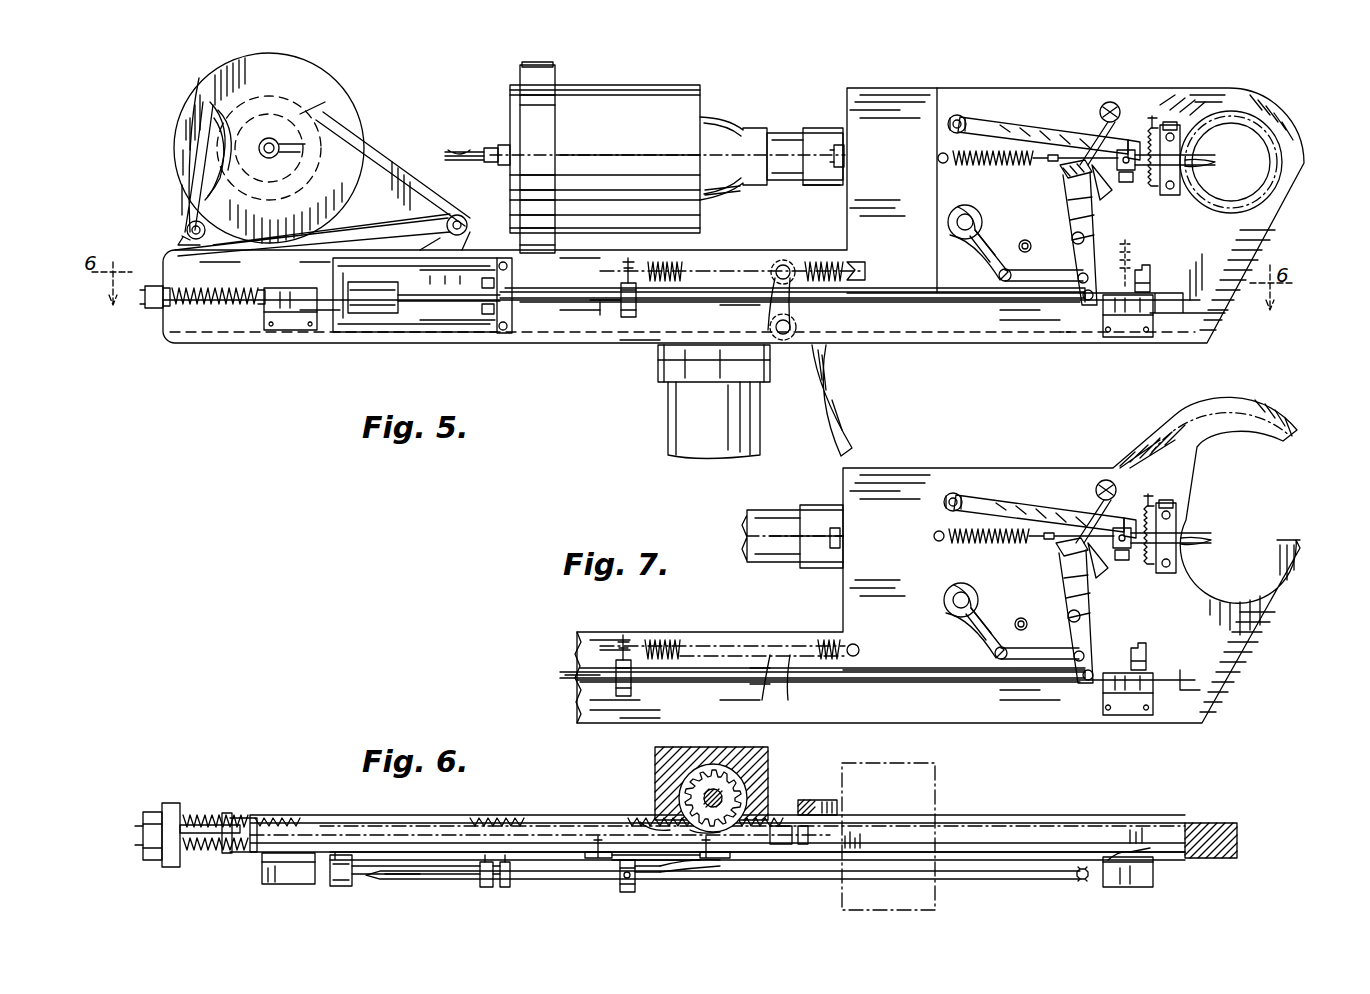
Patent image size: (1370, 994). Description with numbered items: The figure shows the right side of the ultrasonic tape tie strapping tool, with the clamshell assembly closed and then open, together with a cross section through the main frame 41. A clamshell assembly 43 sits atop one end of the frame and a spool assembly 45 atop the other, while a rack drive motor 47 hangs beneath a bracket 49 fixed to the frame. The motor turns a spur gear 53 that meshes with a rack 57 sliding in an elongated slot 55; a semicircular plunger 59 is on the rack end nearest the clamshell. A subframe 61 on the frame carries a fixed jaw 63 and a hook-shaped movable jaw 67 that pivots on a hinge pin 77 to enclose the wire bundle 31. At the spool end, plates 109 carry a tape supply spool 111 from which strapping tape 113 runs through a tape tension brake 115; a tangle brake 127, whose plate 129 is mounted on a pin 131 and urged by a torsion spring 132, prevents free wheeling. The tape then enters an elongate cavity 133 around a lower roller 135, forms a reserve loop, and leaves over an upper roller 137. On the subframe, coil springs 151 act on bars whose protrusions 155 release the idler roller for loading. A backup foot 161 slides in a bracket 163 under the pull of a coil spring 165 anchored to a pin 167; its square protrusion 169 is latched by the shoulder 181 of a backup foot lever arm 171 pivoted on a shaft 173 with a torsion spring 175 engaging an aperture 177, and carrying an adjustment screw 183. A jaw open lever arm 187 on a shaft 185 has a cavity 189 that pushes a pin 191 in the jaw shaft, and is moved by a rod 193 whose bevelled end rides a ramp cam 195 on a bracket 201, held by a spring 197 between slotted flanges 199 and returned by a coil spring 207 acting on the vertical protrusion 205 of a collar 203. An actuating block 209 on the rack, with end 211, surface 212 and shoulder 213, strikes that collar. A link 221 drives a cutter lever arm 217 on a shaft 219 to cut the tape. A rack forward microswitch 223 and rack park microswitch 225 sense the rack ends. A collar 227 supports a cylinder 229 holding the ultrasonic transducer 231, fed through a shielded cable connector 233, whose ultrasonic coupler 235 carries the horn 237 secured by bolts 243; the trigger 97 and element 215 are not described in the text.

In FIG. 5, the wire bundle 31 is at (1280, 190).
In FIG. 5, the main frame 41 is at (925, 340).
In FIG. 7, the main frame 41 is at (880, 720).
In FIG. 6, the main frame 41 is at (1092, 822).
In FIG. 5, the clamshell assembly 43 is at (1328, 146).
In FIG. 7, the clamshell assembly 43 is at (1296, 485).
In FIG. 5, the spool assembly 45 is at (143, 125).
In FIG. 5, the rack drive motor 47 is at (685, 440).
In FIG. 5, the bracket 49 is at (660, 362).
In FIG. 6, the bracket 49 is at (762, 772).
In FIG. 6, the spur gear 53 is at (690, 790).
In FIG. 6, the elongated slot 55 is at (528, 822).
In FIG. 6, the rack 57 is at (640, 820).
In FIG. 5, the semicircular plunger 59 is at (772, 280).
In FIG. 7, the semicircular plunger 59 is at (770, 658).
In FIG. 5, the subframe 61 is at (1092, 88).
In FIG. 7, the subframe 61 is at (1046, 468).
In FIG. 6, the subframe 61 is at (940, 806).
In FIG. 5, the fixed jaw 63 is at (1282, 222).
In FIG. 7, the fixed jaw 63 is at (1265, 608).
In FIG. 6, the fixed jaw 63 is at (1240, 842).
In FIG. 5, the movable jaw 67 is at (1272, 100).
In FIG. 7, the movable jaw 67 is at (1245, 400).
In FIG. 5, the hinge pin 77 is at (1112, 100).
In FIG. 7, the hinge pin 77 is at (1106, 478).
In FIG. 5, the trigger lever 97 is at (830, 400).
In FIG. 6, the trigger lever 97 is at (822, 805).
In FIG. 5, the plates 109 is at (398, 198).
In FIG. 5, the tape supply spool 111 is at (324, 84).
In FIG. 5, the strapping tape 113 is at (385, 156).
In FIG. 6, the strapping tape 113 is at (140, 836).
In FIG. 5, the tape tension brake 115 is at (155, 330).
In FIG. 6, the tape tension brake 115 is at (166, 786).
In FIG. 5, the tangle brake 127 is at (170, 194).
In FIG. 5, the plate 129 is at (195, 158).
In FIG. 5, the pin 131 is at (184, 230).
In FIG. 5, the torsion spring 132 is at (187, 178).
In FIG. 5, the elongate cavity 133 is at (1066, 340).
In FIG. 5, the lower roller 135 is at (783, 345).
In FIG. 6, the lower roller 135 is at (787, 824).
In FIG. 5, the upper roller 137 is at (792, 258).
In FIG. 5, the coil springs 151 is at (1135, 255).
In FIG. 5, the protrusions 155 is at (1152, 282).
In FIG. 7, the protrusions 155 is at (1148, 660).
In FIG. 5, the backup foot 161 is at (1195, 170).
In FIG. 7, the backup foot 161 is at (1200, 545).
In FIG. 5, the bracket 163 is at (1180, 124).
In FIG. 7, the bracket 163 is at (1176, 518).
In FIG. 5, the coil spring 165 is at (995, 168).
In FIG. 7, the coil spring 165 is at (980, 548).
In FIG. 5, the pin 167 is at (938, 162).
In FIG. 7, the pin 167 is at (932, 540).
In FIG. 5, the square protrusion 169 is at (1130, 180).
In FIG. 7, the square protrusion 169 is at (1124, 562).
In FIG. 5, the backup foot lever arm 171 is at (1042, 120).
In FIG. 7, the backup foot lever arm 171 is at (1036, 500).
In FIG. 5, the shaft 173 is at (963, 120).
In FIG. 7, the shaft 173 is at (959, 498).
In FIG. 5, the torsion spring 175 is at (1002, 118).
In FIG. 7, the torsion spring 175 is at (998, 496).
In FIG. 5, the aperture 177 is at (954, 116).
In FIG. 7, the aperture 177 is at (950, 494).
In FIG. 5, the shoulder 181 is at (1122, 150).
In FIG. 7, the shoulder 181 is at (1120, 528).
In FIG. 5, the adjustment screw 183 is at (1154, 126).
In FIG. 7, the adjustment screw 183 is at (1160, 498).
In FIG. 5, the shaft 185 is at (1072, 238).
In FIG. 7, the shaft 185 is at (1080, 618).
In FIG. 5, the jaw open lever arm 187 is at (1068, 220).
In FIG. 7, the jaw open lever arm 187 is at (1064, 596).
In FIG. 6, the jaw open lever arm 187 is at (1075, 885).
In FIG. 5, the cavity 189 is at (1066, 178).
In FIG. 7, the cavity 189 is at (1060, 558).
In FIG. 5, the pin 191 is at (1098, 190).
In FIG. 7, the pin 191 is at (1100, 570).
In FIG. 5, the rod 193 is at (968, 300).
In FIG. 7, the rod 193 is at (978, 698).
In FIG. 6, the rod 193 is at (420, 880).
In FIG. 5, the ramp cam 195 is at (372, 320).
In FIG. 6, the ramp cam 195 is at (345, 887).
In FIG. 5, the spring 197 is at (415, 325).
In FIG. 6, the spring 197 is at (497, 880).
In FIG. 5, the slotted flanges 199 is at (500, 266).
In FIG. 6, the slotted flanges 199 is at (480, 887).
In FIG. 5, the bracket 201 is at (470, 326).
In FIG. 5, the collar 203 is at (630, 320).
In FIG. 7, the collar 203 is at (620, 698).
In FIG. 6, the collar 203 is at (630, 894).
In FIG. 5, the vertical protrusion 205 is at (620, 272).
In FIG. 5, the coil spring 207 is at (685, 262).
In FIG. 7, the coil spring 207 is at (672, 640).
In FIG. 5, the actuating block 209 is at (608, 305).
In FIG. 6, the actuating block 209 is at (695, 862).
In FIG. 5, the end 211 is at (600, 318).
In FIG. 6, the end 211 is at (590, 862).
In FIG. 6, the surface 212 is at (622, 864).
In FIG. 5, the shoulder 213 is at (640, 308).
In FIG. 6, the shoulder 213 is at (640, 875).
In FIG. 5, the bracket 215 is at (1168, 195).
In FIG. 7, the bracket 215 is at (1166, 573).
In FIG. 5, the cutter lever arm 217 is at (990, 262).
In FIG. 7, the cutter lever arm 217 is at (985, 638).
In FIG. 5, the shaft 219 is at (948, 222).
In FIG. 7, the shaft 219 is at (944, 600).
In FIG. 5, the link 221 is at (1025, 274).
In FIG. 7, the link 221 is at (1060, 652).
In FIG. 5, the rack forward microswitch 223 is at (1135, 320).
In FIG. 7, the rack forward microswitch 223 is at (1130, 698).
In FIG. 6, the rack forward microswitch 223 is at (1130, 888).
In FIG. 5, the rack park microswitch 225 is at (295, 330).
In FIG. 6, the rack park microswitch 225 is at (283, 887).
In FIG. 5, the collar 227 is at (545, 70).
In FIG. 5, the cylinder 229 is at (620, 88).
In FIG. 5, the ultrasonic transducer 231 is at (735, 120).
In FIG. 7, the ultrasonic transducer 231 is at (826, 493).
In FIG. 5, the shielded cable connector 233 is at (490, 143).
In FIG. 5, the ultrasonic coupler 235 is at (718, 190).
In FIG. 5, the horn 237 is at (810, 185).
In FIG. 5, the bolts 243 is at (836, 145).
In FIG. 7, the bolts 243 is at (835, 548).